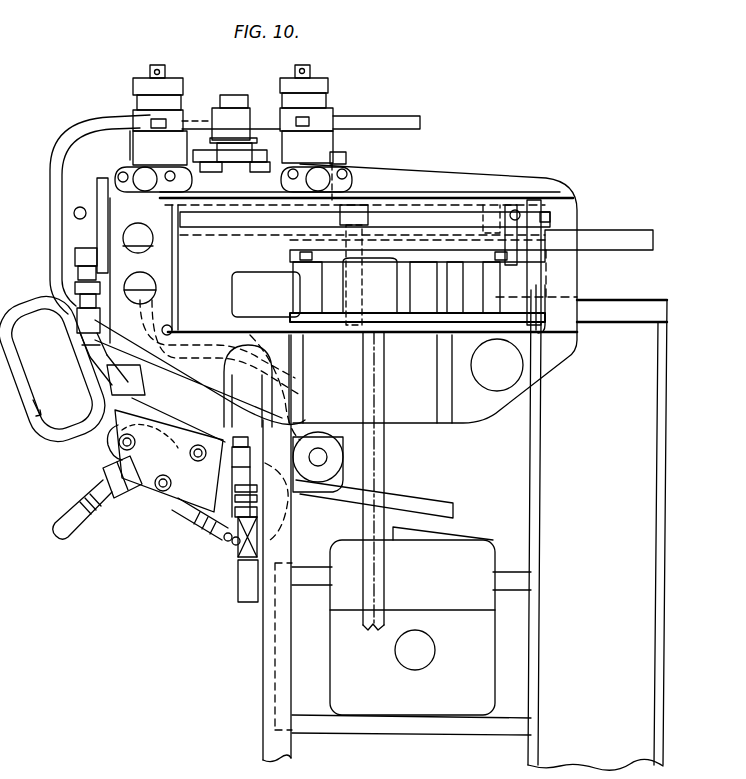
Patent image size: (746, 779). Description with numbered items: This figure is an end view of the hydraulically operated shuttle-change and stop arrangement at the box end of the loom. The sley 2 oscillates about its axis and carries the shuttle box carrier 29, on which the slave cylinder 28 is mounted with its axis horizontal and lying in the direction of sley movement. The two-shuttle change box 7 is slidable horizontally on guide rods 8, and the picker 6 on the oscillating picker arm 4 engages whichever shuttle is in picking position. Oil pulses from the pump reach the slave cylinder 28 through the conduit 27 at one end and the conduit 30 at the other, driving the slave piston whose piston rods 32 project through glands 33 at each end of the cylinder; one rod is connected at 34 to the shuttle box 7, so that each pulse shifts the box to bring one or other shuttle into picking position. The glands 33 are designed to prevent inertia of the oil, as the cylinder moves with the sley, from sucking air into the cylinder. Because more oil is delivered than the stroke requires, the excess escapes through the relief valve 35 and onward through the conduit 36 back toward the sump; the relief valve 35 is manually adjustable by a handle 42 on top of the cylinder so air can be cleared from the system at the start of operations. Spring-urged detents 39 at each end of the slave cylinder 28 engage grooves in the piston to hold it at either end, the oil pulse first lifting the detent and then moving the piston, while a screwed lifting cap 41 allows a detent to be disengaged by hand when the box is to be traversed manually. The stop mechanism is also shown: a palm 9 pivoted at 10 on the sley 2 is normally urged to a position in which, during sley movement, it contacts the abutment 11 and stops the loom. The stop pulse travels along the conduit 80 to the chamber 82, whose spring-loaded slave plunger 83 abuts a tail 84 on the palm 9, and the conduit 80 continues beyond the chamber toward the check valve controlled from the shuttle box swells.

The sley 2 is at (270, 741).
The picker arm 4 is at (368, 624).
The picker 6 is at (372, 298).
The two-shuttle change box 7 is at (420, 250).
The guide rods 8 is at (600, 240).
The palm 9 is at (432, 511).
The pivot 10 is at (330, 455).
The abutment 11 is at (466, 540).
The conduit 27 is at (133, 128).
The slave cylinder 28 is at (346, 160).
The shuttle box carrier 29 is at (66, 253).
The conduit 30 is at (187, 116).
The piston rods 32 is at (413, 212).
The glands 33 is at (356, 210).
The connection 34 is at (484, 214).
The relief valve 35 is at (240, 150).
The conduit 36 is at (140, 158).
The spring-urged detents 39 is at (166, 70).
The screwed lifting cap 41 is at (141, 82).
The handle 42 is at (224, 97).
The conduit 80 is at (100, 520).
The chamber 82 is at (156, 498).
The slave plunger 83 is at (197, 513).
The tail 84 is at (236, 540).